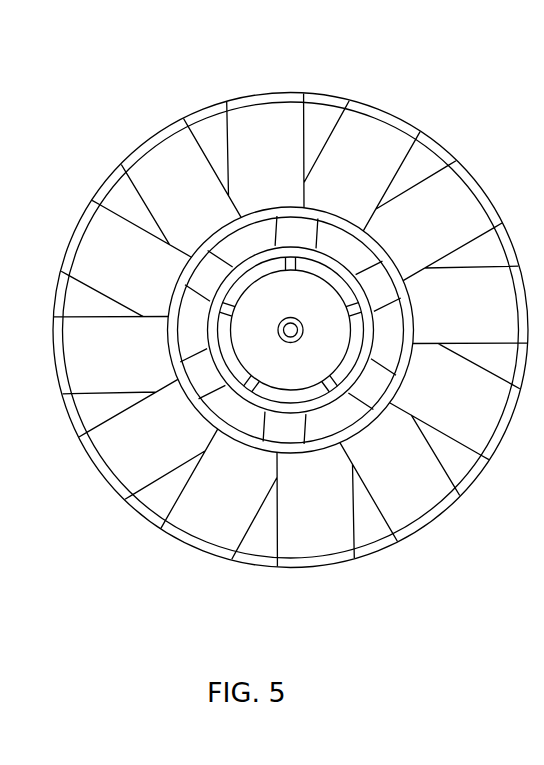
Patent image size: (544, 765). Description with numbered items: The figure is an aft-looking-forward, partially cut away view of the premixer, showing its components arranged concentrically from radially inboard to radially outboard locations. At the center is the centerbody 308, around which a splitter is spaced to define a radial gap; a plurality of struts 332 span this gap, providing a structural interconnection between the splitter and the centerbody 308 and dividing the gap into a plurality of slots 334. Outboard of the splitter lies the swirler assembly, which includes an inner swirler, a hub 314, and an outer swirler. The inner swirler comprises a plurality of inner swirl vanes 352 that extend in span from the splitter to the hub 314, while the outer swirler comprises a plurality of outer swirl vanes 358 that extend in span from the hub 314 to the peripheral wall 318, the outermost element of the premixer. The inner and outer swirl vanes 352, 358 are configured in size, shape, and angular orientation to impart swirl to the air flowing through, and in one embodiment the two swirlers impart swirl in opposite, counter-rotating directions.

The centerbody 308 is at (310, 317).
The hub 314 is at (362, 430).
The peripheral wall 318 is at (371, 101).
The struts 332 is at (253, 385).
The slots 334 is at (283, 397).
The inner swirl vanes 352 is at (378, 282).
The outer swirl vanes 358 is at (385, 175).